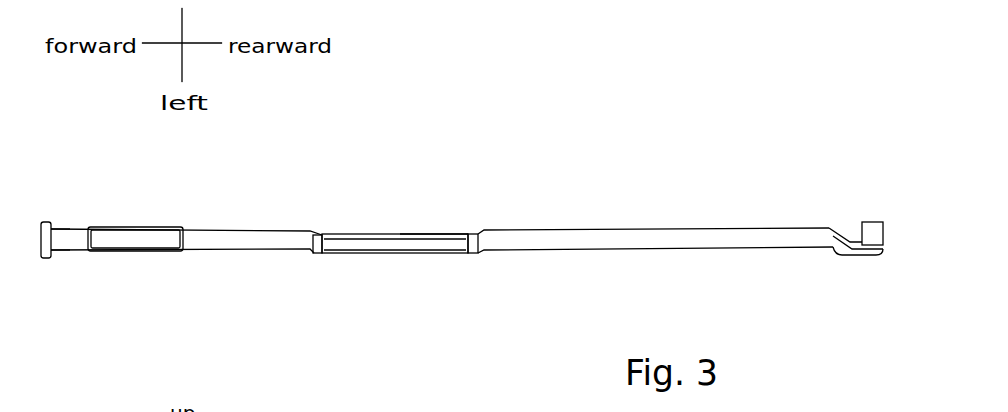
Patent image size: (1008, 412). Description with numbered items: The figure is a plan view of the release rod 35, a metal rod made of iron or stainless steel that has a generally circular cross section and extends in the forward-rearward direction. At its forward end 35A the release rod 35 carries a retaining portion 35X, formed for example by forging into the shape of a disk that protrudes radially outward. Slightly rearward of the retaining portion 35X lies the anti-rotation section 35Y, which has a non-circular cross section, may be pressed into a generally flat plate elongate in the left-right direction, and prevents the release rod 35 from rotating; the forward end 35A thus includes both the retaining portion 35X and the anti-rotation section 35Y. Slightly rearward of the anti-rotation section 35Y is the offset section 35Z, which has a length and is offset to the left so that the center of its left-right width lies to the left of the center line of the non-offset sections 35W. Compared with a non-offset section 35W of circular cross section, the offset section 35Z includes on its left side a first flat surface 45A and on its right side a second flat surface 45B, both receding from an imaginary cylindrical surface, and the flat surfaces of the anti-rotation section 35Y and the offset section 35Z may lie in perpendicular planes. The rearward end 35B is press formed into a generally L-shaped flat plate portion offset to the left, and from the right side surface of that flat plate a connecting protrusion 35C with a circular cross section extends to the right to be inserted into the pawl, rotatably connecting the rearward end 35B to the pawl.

The release rod 35 is at (623, 177).
The retaining portion 35X is at (45, 221).
The anti-rotation section 35Y is at (135, 231).
The offset section 35Z is at (367, 235).
The forward end 35A is at (57, 265).
The rearward end 35B is at (852, 264).
The connecting protrusion 35C is at (875, 228).
The non-offset sections 35W is at (240, 251).
The first flat surface 45A is at (395, 254).
The second flat surface 45B is at (425, 232).